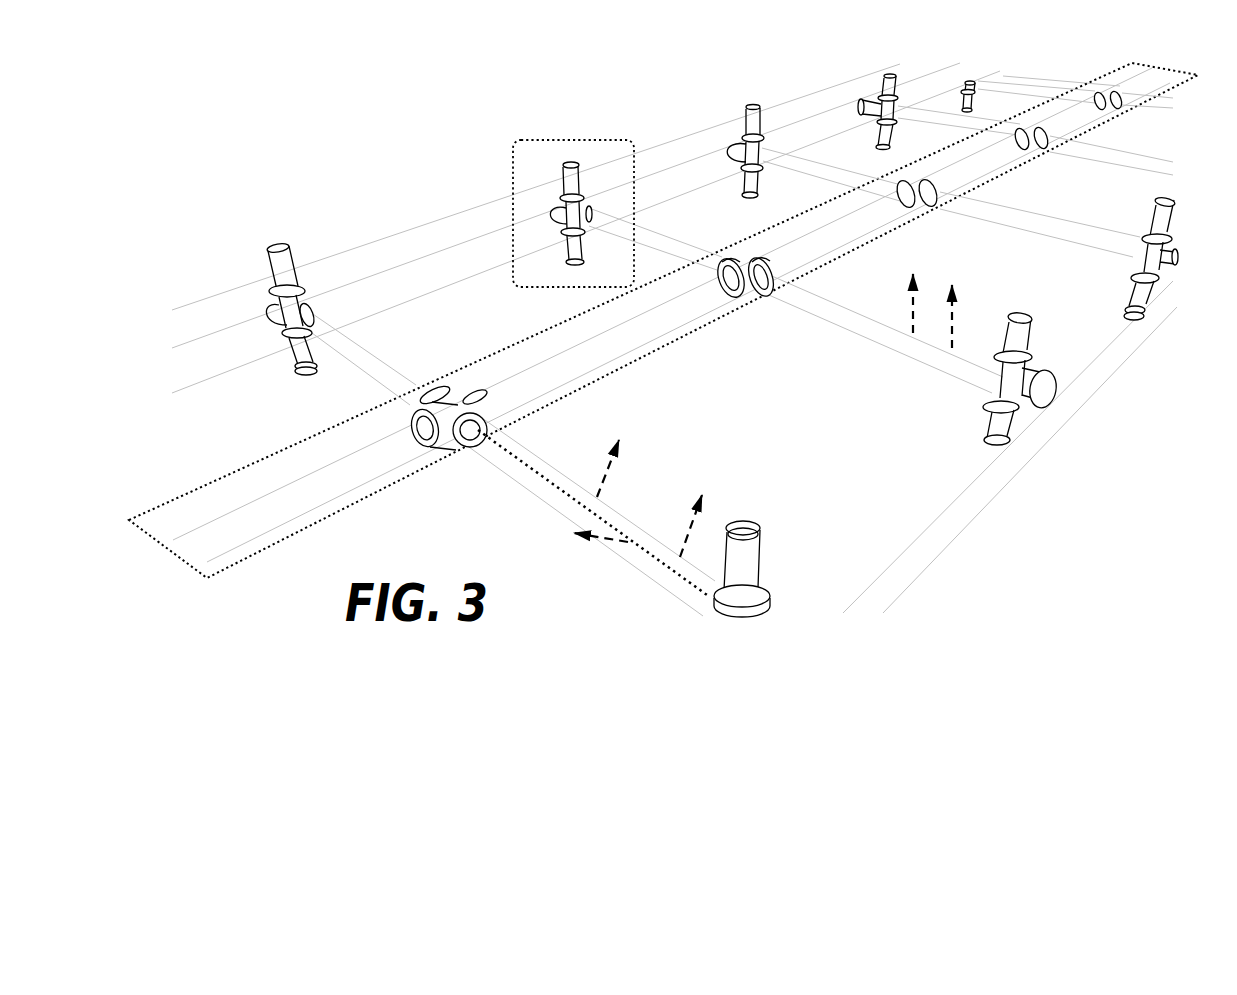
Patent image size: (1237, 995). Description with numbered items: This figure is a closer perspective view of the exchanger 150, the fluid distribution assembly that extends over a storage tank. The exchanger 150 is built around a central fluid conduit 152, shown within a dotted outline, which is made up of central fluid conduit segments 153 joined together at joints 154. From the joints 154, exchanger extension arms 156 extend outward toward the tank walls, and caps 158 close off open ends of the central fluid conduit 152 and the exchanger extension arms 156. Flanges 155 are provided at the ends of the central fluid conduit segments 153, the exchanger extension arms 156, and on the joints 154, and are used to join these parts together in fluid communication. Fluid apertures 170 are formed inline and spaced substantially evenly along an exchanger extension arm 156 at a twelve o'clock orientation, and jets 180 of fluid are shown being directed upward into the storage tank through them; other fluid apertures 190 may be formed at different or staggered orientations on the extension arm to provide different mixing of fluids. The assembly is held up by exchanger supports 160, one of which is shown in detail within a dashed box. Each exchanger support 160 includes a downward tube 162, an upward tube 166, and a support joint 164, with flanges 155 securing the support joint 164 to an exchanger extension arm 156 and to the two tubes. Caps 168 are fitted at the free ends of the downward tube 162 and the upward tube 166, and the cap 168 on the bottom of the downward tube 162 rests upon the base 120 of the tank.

The base 120 is at (918, 571).
The exchanger 150 is at (238, 251).
The central fluid conduit 152 is at (698, 331).
The central fluid conduit segments 153 is at (623, 343).
The joints 154 is at (750, 293).
The flanges 155 is at (750, 252).
The exchanger extension arms 156 is at (366, 370).
The caps 158 is at (1049, 399).
The exchanger supports 160 is at (621, 141).
The downward tube 162 is at (570, 248).
The support joint 164 is at (570, 218).
The upward tube 166 is at (569, 177).
The caps 168 is at (581, 164).
The fluid apertures 170 is at (816, 292).
The jets 180 is at (953, 320).
The fluid apertures 190 is at (588, 487).